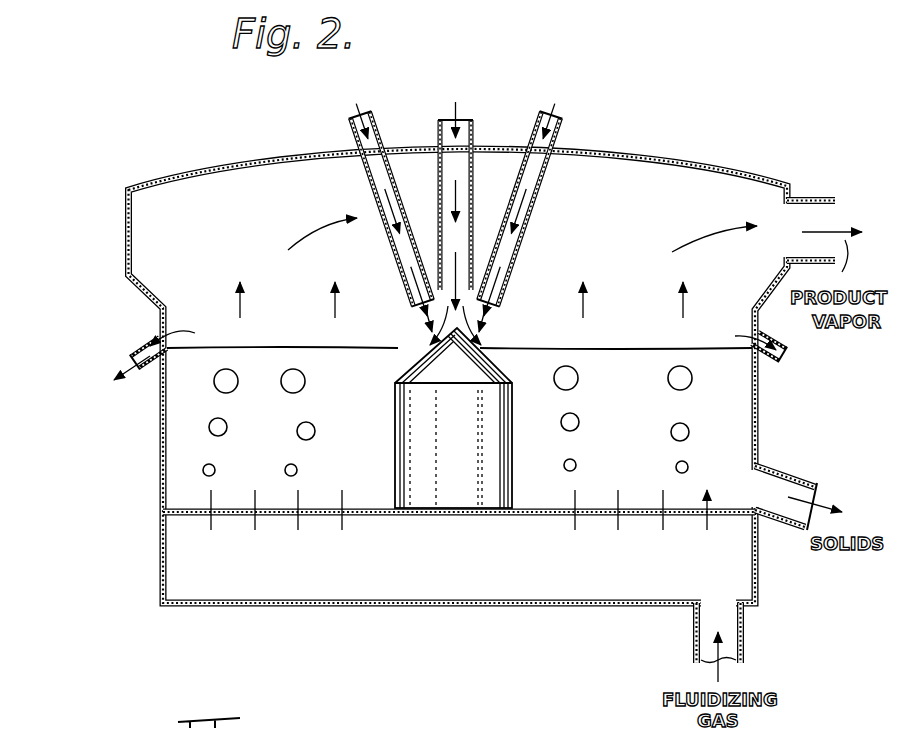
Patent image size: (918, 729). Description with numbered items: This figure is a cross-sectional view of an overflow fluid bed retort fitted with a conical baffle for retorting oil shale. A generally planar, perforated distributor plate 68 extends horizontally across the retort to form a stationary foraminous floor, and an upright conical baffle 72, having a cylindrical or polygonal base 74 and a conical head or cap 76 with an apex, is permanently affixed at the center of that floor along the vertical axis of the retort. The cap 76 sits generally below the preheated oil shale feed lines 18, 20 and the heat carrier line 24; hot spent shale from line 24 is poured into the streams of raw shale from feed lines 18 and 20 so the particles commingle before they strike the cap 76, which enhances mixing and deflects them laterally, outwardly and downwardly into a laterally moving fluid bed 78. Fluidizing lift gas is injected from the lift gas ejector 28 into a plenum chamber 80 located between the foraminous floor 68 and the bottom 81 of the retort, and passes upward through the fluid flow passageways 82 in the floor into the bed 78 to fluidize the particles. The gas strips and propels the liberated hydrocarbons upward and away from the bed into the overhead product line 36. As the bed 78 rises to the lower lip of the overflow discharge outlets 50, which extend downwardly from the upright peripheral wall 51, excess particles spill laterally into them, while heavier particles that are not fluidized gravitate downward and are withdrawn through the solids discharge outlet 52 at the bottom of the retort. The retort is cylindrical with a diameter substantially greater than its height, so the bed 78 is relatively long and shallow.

The preheated oil shale feed line 18 is at (350, 128).
The preheated oil shale feed line 20 is at (565, 130).
The heat carrier line 24 is at (473, 130).
The lift gas ejector 28 is at (692, 638).
The product line 36 is at (812, 198).
The overflow discharge outlet 50 is at (151, 372).
The upright peripheral wall 51 is at (125, 229).
The solids discharge outlet 52 is at (785, 472).
The perforated distributor plate 68 is at (385, 508).
The conical baffle 72 is at (398, 383).
The cylindrical or polygonal base 74 is at (512, 440).
The conical head or cap 76 is at (490, 360).
The laterally moving fluid bed 78 is at (608, 348).
The plenum chamber 80 is at (480, 570).
The bottom of the retort 81 is at (435, 607).
The fluid flow passageways 82 is at (612, 520).